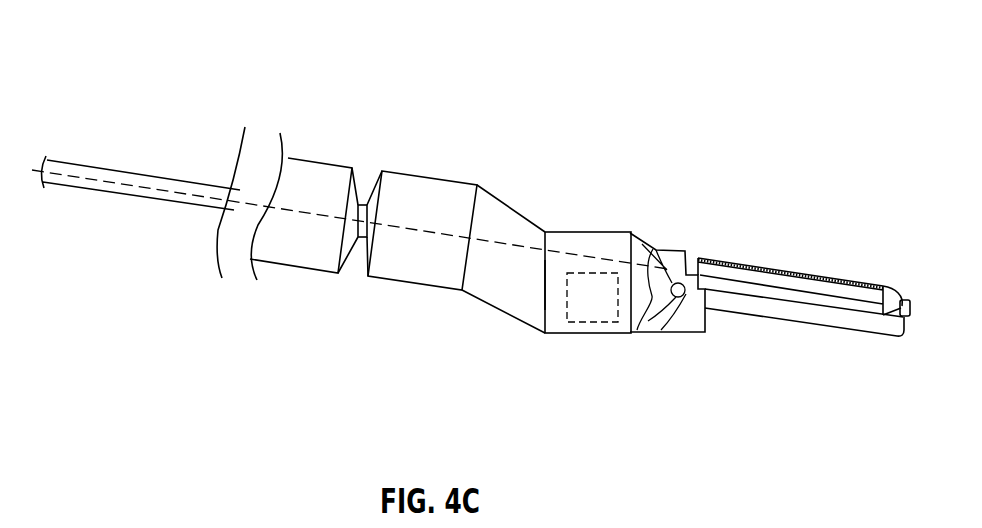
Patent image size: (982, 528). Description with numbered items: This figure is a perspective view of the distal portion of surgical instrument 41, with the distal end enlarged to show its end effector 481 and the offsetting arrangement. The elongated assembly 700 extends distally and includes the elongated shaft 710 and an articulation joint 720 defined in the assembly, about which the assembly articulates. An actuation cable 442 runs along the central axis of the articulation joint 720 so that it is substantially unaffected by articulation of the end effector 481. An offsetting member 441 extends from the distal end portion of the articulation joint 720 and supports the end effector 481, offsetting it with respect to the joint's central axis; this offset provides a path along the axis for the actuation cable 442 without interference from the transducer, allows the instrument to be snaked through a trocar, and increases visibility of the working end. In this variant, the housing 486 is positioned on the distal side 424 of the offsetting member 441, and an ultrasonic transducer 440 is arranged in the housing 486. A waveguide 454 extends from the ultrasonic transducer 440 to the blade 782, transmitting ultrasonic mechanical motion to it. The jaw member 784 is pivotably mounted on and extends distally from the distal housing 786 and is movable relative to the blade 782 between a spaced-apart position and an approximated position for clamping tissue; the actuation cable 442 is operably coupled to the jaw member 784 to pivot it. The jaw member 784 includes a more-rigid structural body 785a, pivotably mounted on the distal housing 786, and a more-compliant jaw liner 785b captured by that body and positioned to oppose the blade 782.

The surgical instrument 41 is at (188, 131).
The actuation cable 442 is at (84, 180).
The elongated shaft 710 is at (158, 199).
The articulation joint 720 is at (377, 132).
The distal housing 786 is at (460, 182).
The housing 486 is at (595, 232).
The waveguide 454 is at (671, 289).
The offsetting member 441 is at (477, 283).
The distal side 424 is at (547, 293).
The ultrasonic transducer 440 is at (607, 323).
The jaw member 784 is at (778, 283).
The more-rigid structural body 785a is at (831, 289).
The more-compliant jaw liner 785b is at (904, 301).
The blade 782 is at (765, 318).
The end effector 481 is at (826, 353).
The elongated assembly 700 is at (786, 74).